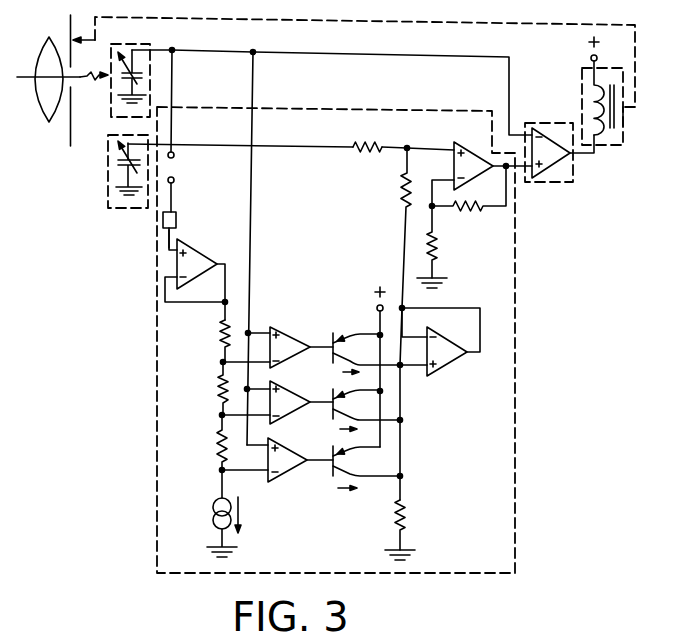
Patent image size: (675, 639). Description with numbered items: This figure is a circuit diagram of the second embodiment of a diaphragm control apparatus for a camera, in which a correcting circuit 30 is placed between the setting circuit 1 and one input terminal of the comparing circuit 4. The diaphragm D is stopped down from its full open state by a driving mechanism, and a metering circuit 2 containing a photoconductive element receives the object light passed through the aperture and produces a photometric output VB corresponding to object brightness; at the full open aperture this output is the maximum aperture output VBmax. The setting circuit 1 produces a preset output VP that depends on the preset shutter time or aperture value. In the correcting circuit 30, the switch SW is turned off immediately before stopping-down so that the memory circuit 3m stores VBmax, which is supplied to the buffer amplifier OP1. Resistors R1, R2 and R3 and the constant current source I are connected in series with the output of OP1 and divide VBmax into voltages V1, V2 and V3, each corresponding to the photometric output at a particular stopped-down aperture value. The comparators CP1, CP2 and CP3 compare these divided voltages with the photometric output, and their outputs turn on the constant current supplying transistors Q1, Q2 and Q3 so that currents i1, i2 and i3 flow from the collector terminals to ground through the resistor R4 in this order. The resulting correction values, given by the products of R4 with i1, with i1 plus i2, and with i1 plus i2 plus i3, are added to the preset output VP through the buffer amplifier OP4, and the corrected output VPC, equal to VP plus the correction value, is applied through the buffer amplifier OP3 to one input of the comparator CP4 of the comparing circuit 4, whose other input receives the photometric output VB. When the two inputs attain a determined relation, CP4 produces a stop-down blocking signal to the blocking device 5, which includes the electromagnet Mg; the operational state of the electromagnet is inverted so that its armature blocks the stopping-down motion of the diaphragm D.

The diaphragm D is at (70, 20).
The setting circuit 1 is at (107, 173).
The metering circuit 2 is at (147, 44).
The memory circuit 3m is at (143, 235).
The comparing circuit 4 is at (547, 122).
The blocking device 5 is at (623, 126).
The correcting circuit 30 is at (153, 391).
The switch SW is at (174, 166).
The photometric output VB is at (238, 50).
The preset output VP is at (233, 145).
The maximum aperture output VBmax is at (170, 239).
The buffer amplifier OP1 is at (165, 277).
The buffer amplifier OP3 is at (456, 143).
The buffer amplifier OP4 is at (443, 363).
The comparator CP1 is at (285, 327).
The comparator CP2 is at (302, 397).
The comparator CP3 is at (285, 484).
The comparator CP4 is at (566, 156).
The constant current supplying transistor Q1 is at (352, 334).
The constant current supplying transistor Q2 is at (337, 413).
The constant current supplying transistor Q3 is at (340, 478).
The current i1 is at (360, 377).
The current i2 is at (357, 437).
The current i3 is at (356, 497).
The resistor R1 is at (220, 334).
The resistor R2 is at (219, 390).
The resistor R3 is at (218, 444).
The resistor R4 is at (407, 519).
The divided voltage V1 is at (220, 362).
The divided voltage V2 is at (219, 415).
The divided voltage V3 is at (219, 470).
The constant current source I is at (212, 508).
The corrected preset output VPC is at (474, 210).
The electromagnet Mg is at (588, 90).